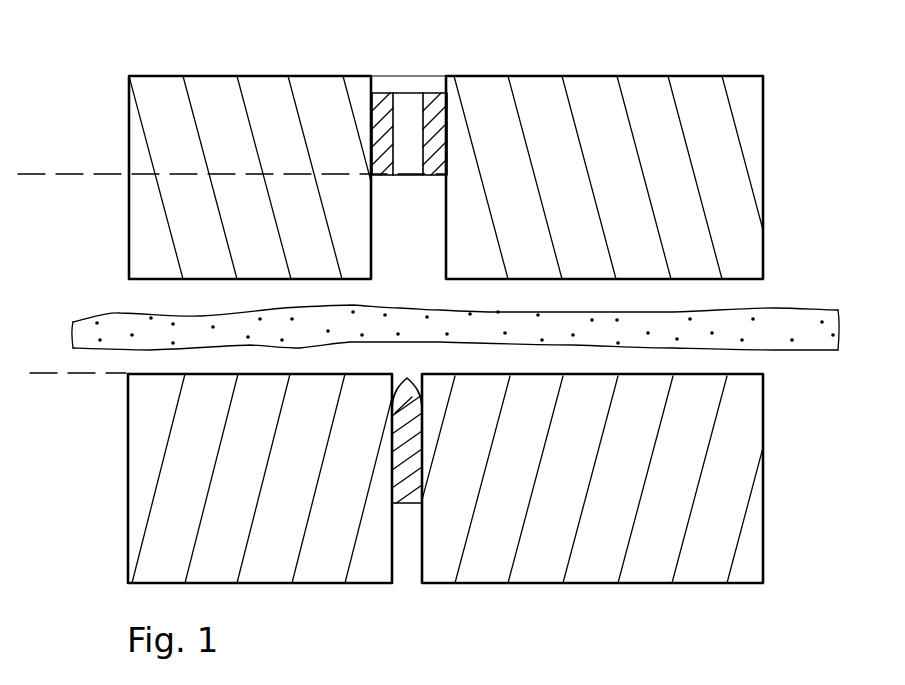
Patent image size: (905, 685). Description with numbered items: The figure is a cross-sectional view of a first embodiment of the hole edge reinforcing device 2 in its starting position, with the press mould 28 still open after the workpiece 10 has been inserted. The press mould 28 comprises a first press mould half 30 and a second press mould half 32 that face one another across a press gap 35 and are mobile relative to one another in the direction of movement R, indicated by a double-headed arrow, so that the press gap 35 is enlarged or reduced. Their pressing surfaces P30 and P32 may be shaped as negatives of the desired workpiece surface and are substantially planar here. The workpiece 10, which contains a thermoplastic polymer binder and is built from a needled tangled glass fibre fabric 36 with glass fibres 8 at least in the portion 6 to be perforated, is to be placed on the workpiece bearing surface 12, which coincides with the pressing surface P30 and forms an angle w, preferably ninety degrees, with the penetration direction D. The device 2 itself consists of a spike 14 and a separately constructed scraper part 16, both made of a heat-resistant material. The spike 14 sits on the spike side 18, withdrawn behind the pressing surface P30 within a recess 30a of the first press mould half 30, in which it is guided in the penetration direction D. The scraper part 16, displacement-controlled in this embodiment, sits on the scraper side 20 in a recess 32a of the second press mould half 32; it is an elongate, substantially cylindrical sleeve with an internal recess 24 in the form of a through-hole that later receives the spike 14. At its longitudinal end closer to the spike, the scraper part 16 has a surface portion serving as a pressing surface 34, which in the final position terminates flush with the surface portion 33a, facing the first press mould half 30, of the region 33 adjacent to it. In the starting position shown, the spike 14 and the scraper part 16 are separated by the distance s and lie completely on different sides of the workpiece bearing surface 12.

The hole edge reinforcing device 2 is at (450, 46).
The press mould 28 is at (447, 55).
The portion to be perforated 6 is at (455, 317).
The glass fibres 8 is at (455, 317).
The needled tangled glass fibre fabric 36 is at (413, 318).
The workpiece 10 is at (810, 313).
The workpiece bearing surface 12 is at (371, 374).
The spike 14 is at (409, 491).
The scraper part 16 is at (383, 94).
The spike side 18 is at (505, 478).
The first press mould half 30 is at (733, 477).
The scraper side 20 is at (493, 177).
The second press mould half 32 is at (717, 178).
The internal recess 24 is at (407, 166).
The recess in the second press mould half 32a is at (450, 88).
The region adjacent the pressing surface 33 is at (208, 279).
The surface portion 33a is at (346, 281).
The pressing surface 34 is at (382, 176).
The press gap 35 is at (743, 363).
The recess in the first press mould half 30a is at (422, 570).
The distance S is at (41, 373).
The direction of movement R is at (663, 373).
The penetration direction D is at (405, 377).
The angle W is at (410, 373).
The pressing surface of the first press mould half P30 is at (140, 372).
The pressing surface of the second press mould half P32 is at (746, 281).